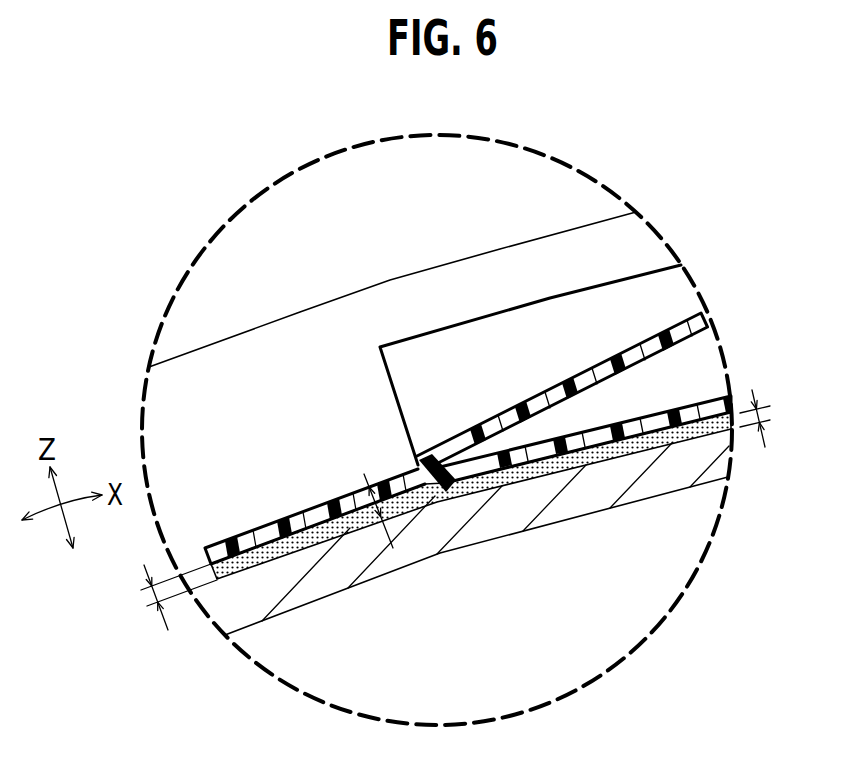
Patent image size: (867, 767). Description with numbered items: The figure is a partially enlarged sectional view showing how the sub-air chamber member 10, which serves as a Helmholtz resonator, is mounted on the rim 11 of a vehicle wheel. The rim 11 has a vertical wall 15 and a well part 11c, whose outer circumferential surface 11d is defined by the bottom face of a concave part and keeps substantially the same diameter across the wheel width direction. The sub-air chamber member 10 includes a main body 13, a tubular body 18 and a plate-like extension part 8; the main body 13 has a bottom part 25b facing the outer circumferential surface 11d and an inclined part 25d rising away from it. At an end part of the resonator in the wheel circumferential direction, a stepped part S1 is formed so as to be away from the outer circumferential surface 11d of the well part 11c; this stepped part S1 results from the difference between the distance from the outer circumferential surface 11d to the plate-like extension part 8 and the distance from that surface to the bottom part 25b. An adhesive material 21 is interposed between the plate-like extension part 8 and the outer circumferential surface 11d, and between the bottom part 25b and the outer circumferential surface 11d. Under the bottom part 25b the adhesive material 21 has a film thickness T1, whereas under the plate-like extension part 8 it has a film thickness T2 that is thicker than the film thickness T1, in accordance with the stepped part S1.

The vertical wall 15 is at (392, 289).
The rim 11 is at (289, 310).
The tubular body 18 is at (503, 335).
The sub-air chamber member 10 is at (616, 330).
The main body 13 is at (616, 393).
The inclined part 25d is at (663, 352).
The bottom part 25b is at (692, 407).
The plate-like extension part 8 is at (297, 520).
The well part 11c is at (471, 535).
The outer circumferential surface 11d is at (308, 541).
The adhesive material 21 is at (260, 574).
The film thickness T1 is at (762, 418).
The film thickness T2 is at (158, 604).
The stepped part S1 is at (366, 480).